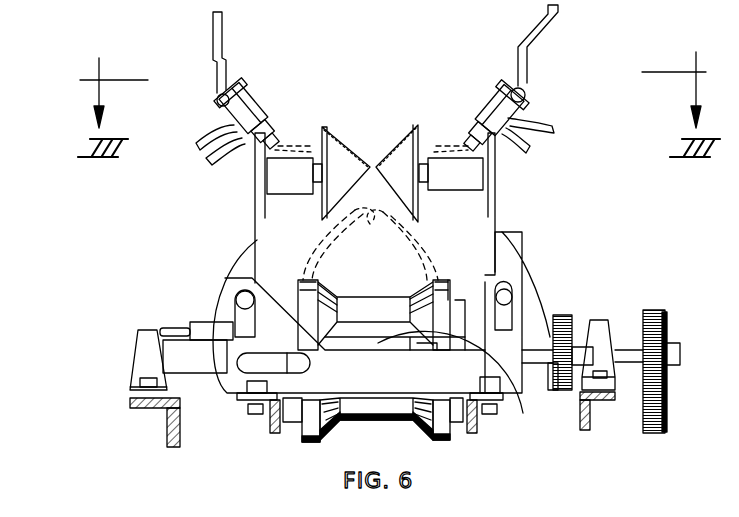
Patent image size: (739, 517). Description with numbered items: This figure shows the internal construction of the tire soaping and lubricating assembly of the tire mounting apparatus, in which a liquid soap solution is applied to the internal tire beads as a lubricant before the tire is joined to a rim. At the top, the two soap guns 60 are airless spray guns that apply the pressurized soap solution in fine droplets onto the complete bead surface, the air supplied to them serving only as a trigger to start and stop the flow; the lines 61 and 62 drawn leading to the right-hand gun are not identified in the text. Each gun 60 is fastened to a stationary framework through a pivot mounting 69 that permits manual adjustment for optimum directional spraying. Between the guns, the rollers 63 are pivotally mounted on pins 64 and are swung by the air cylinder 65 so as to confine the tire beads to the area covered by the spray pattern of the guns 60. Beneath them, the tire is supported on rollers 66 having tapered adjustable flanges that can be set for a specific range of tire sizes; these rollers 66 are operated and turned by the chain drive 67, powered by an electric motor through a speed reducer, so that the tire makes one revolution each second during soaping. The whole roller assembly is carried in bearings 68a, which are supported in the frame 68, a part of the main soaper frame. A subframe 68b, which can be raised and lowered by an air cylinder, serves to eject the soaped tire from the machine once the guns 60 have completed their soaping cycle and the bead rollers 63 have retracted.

The soap guns 60 is at (540, 104).
The hose 61 is at (542, 143).
The hose 62 is at (518, 147).
The rollers 63 is at (396, 143).
The pins 64 is at (506, 297).
The air cylinder 65 is at (548, 337).
The rollers 66 is at (307, 445).
The chain drive 67 is at (563, 316).
The frame 68 is at (165, 425).
The bearings 68a is at (137, 333).
The subframe 68b is at (264, 431).
The pivot mounting 69 is at (217, 100).